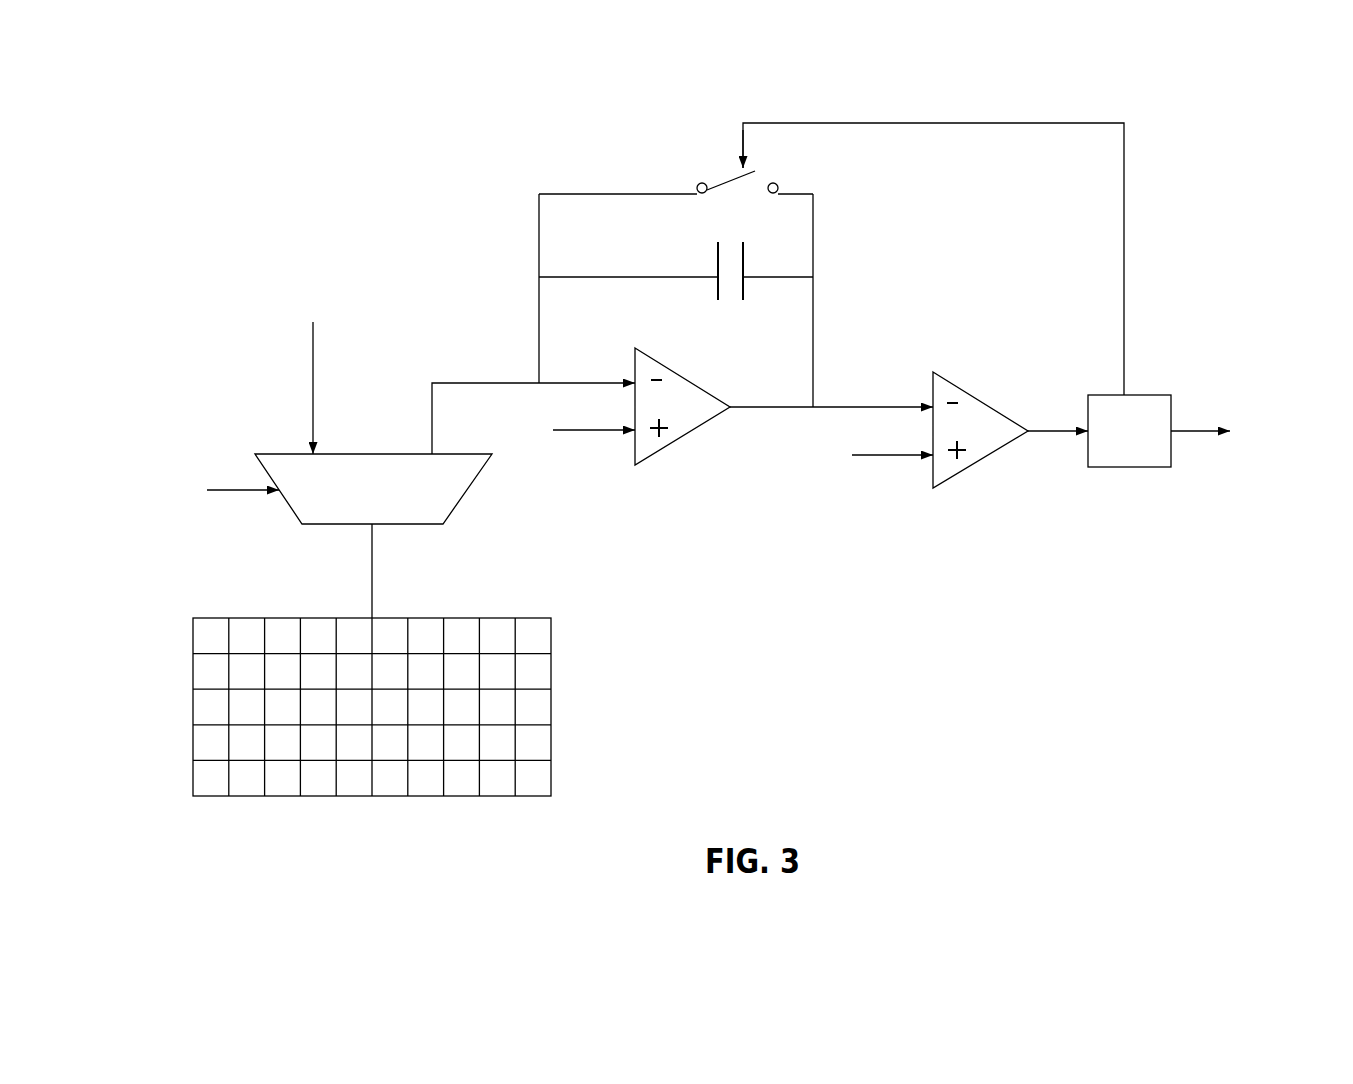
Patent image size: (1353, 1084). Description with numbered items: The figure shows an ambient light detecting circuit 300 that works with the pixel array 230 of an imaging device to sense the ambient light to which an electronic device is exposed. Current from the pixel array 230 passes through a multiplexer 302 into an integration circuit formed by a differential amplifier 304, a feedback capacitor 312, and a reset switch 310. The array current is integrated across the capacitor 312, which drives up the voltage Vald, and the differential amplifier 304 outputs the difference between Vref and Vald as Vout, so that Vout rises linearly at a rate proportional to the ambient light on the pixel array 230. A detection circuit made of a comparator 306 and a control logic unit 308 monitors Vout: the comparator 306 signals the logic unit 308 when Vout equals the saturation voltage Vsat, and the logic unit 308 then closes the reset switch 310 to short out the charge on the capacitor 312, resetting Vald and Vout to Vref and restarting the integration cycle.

The ambient light detecting circuit 300 is at (720, 459).
The multiplexer 302 is at (373, 489).
The differential amplifier 304 is at (658, 453).
The comparator 306 is at (955, 480).
The control logic unit 308 is at (1129, 431).
The reset switch 310 is at (698, 184).
The capacitor 312 is at (718, 250).
The pixel array 230 is at (288, 618).